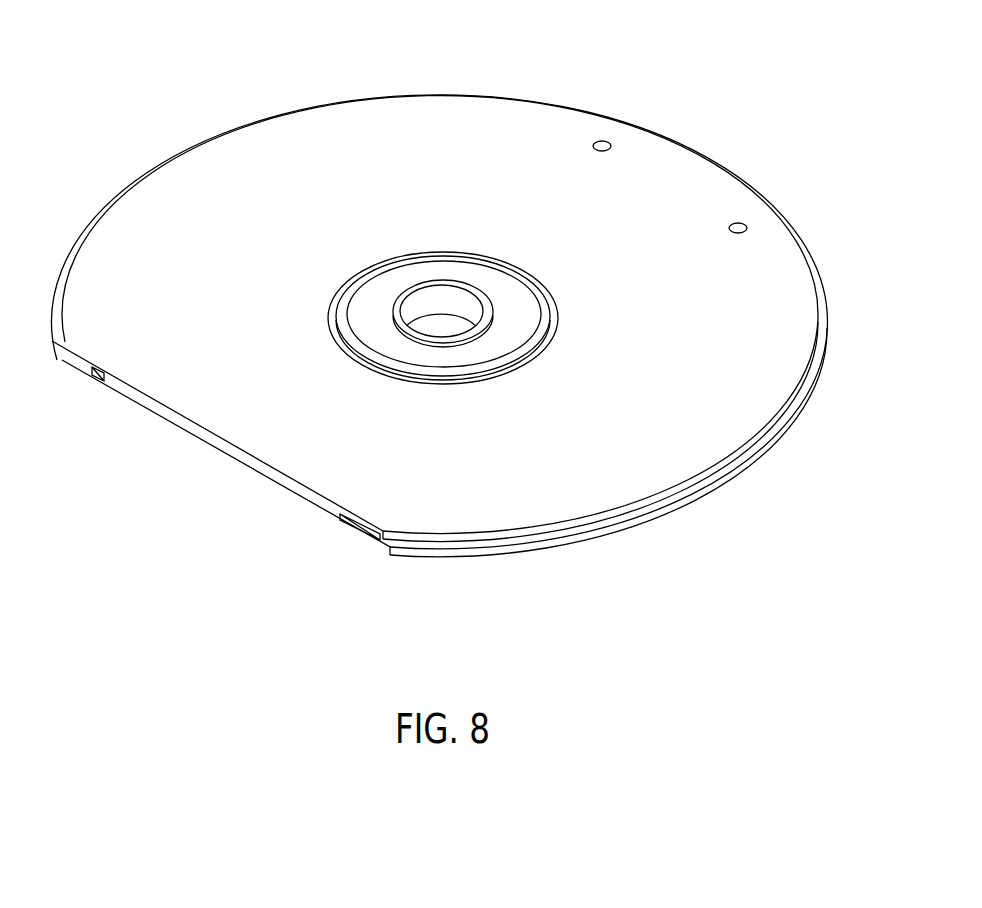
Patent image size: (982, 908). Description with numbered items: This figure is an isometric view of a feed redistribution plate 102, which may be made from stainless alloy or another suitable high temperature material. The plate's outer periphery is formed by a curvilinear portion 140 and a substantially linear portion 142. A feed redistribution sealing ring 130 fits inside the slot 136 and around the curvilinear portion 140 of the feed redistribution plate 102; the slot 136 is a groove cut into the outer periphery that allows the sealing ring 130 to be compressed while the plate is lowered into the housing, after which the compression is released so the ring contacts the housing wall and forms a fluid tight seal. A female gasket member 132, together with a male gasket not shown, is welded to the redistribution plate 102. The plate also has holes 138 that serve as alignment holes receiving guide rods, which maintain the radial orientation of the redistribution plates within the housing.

The feed redistribution plate 102 is at (712, 296).
The feed redistribution sealing ring 130 is at (818, 367).
The female gasket member 132 is at (512, 368).
The slot 136 is at (105, 378).
The holes 138 is at (603, 141).
The curvilinear portion 140 is at (318, 103).
The substantially linear portion 142 is at (318, 516).